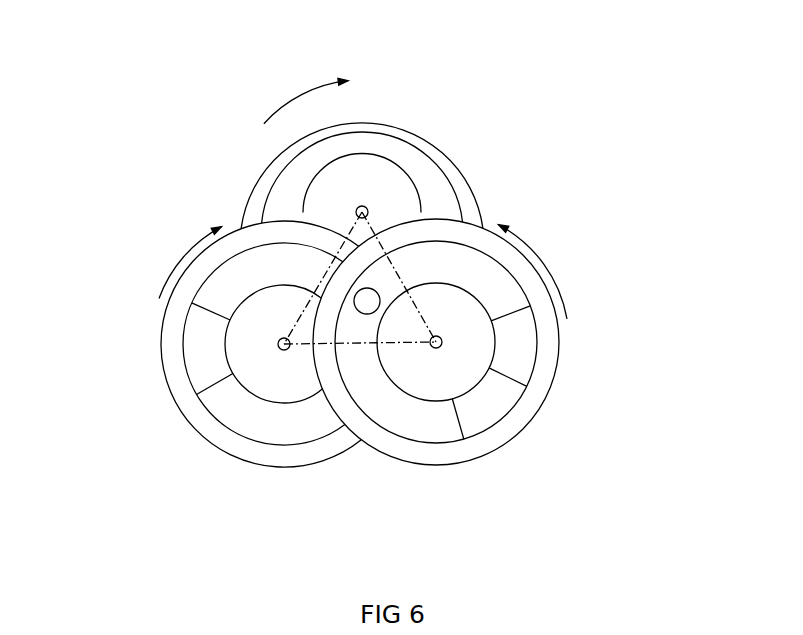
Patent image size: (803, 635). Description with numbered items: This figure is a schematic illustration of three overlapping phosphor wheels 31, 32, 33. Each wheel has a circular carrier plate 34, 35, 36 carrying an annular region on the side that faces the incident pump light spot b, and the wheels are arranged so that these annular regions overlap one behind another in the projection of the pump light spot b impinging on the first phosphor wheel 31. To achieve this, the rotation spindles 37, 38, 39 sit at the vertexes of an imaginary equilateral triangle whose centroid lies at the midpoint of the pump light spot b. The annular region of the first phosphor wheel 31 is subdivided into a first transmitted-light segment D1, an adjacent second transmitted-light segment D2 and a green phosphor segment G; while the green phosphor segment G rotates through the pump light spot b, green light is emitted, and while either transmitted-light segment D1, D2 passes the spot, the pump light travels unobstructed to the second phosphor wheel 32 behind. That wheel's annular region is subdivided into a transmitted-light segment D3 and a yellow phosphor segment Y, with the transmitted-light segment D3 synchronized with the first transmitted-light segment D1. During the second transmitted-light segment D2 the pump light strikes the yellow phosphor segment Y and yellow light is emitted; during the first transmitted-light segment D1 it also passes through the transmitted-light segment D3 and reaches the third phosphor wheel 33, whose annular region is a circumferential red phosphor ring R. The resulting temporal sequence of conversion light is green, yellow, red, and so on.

The first phosphor wheel 31 is at (560, 315).
The second phosphor wheel 32 is at (167, 400).
The third phosphor wheel 33 is at (247, 157).
The circular carrier plate 34 is at (490, 438).
The circular carrier plate 35 is at (223, 438).
The circular carrier plate 36 is at (408, 110).
The rotation spindle 37 is at (442, 341).
The rotation spindle 38 is at (285, 350).
The rotation spindle 39 is at (362, 206).
The first transmitted-light segment D1 is at (525, 354).
The second transmitted-light segment D2 is at (495, 399).
The transmitted-light segment D3 is at (200, 345).
The red phosphor ring R is at (418, 157).
The green phosphor segment G is at (442, 432).
The yellow phosphor segment Y is at (311, 423).
The pump light spot b is at (367, 301).